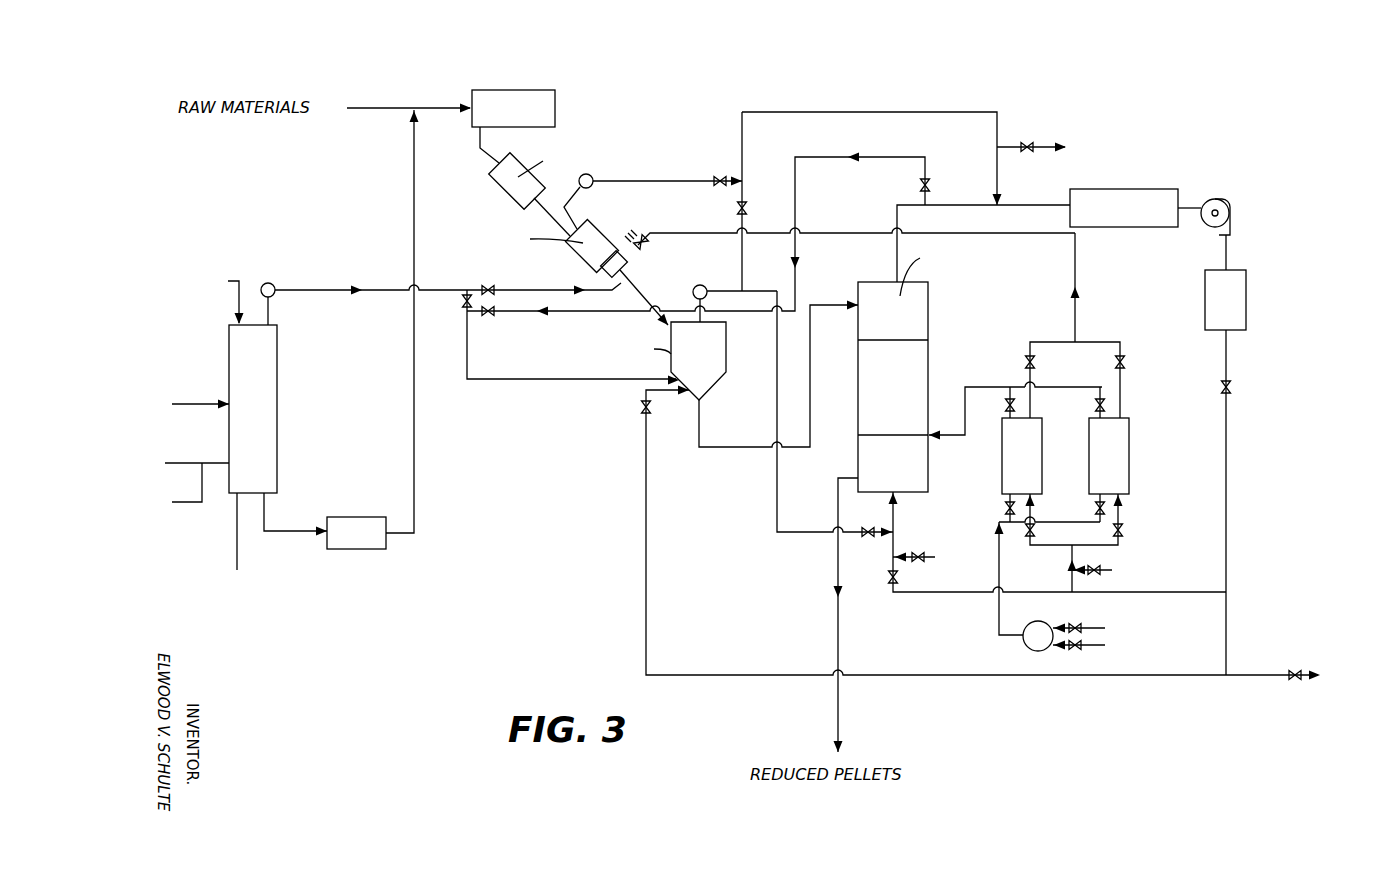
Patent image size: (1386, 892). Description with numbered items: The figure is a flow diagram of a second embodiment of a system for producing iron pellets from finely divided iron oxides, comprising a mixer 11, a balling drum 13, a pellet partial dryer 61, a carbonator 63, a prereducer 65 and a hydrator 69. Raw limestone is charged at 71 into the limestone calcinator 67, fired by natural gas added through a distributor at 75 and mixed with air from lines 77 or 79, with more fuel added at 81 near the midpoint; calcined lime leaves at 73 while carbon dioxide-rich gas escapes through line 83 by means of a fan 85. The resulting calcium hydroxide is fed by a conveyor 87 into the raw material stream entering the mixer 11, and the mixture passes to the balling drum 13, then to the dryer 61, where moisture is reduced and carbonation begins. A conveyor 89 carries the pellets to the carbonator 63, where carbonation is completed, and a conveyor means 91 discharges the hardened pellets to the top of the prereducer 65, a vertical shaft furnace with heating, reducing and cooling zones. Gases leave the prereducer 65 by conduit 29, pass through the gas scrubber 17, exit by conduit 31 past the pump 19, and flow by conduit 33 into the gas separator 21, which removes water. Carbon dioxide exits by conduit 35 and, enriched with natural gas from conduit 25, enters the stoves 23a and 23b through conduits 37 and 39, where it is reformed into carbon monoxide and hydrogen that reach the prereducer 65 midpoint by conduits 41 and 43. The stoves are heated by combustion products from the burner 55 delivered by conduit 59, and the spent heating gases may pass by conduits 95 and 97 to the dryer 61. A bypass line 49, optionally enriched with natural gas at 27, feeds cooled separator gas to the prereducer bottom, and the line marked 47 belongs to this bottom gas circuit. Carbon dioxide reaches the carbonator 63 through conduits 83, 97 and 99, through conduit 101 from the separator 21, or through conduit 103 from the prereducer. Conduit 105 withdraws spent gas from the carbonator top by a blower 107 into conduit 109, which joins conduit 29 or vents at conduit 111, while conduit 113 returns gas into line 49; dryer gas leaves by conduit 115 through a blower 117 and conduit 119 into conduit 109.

The mixer 11 is at (538, 90).
The balling drum 13 is at (487, 170).
The gas scrubber 17 is at (1135, 165).
The pump 19 is at (1230, 210).
The gas separator 21 is at (1205, 290).
The stove 23a is at (1002, 444).
The stove 23b is at (1130, 487).
The conduit 25 is at (1112, 575).
The natural gas enrichment point 27 is at (906, 557).
The conduit 29 is at (947, 205).
The conduit 31 is at (1193, 208).
The conduit 33 is at (1228, 250).
The conduit 35 is at (1203, 404).
The conduit 37 is at (1072, 580).
The conduit 39 is at (1040, 547).
The conduit 41 is at (1079, 387).
The conduit 43 is at (985, 387).
The conduit 47 is at (920, 597).
The line 49 is at (894, 512).
The burner 55 is at (1025, 645).
The conduit 59 is at (998, 555).
The pellet partial dryer 61 is at (595, 228).
The carbonator 63 is at (727, 348).
The prereducer 65 is at (928, 355).
The limestone calcinator 67 is at (278, 393).
The hydrator 69 is at (372, 517).
The limestone charging point 71 is at (242, 280).
The calcined lime outlet 73 is at (266, 513).
The fuel distributor 75 is at (212, 463).
The air line 77 is at (181, 505).
The air line 79 is at (238, 545).
The fuel addition point 81 is at (190, 404).
The line 83 is at (270, 312).
The fan 85 is at (274, 284).
The conveyor 87 is at (414, 412).
The conveyor 89 is at (634, 284).
The conveyor means 91 is at (733, 448).
The conduit 95 is at (1100, 342).
The conduit 97 is at (383, 290).
The conduit 99 is at (553, 380).
The conduit 101 is at (645, 515).
The conduit 103 is at (812, 157).
The conduit 105 is at (694, 293).
The blower 107 is at (704, 285).
The conduit 109 is at (898, 112).
The conduit 111 is at (1008, 146).
The conduit 113 is at (777, 496).
The conduit 115 is at (573, 200).
The blower 117 is at (593, 178).
The conduit 119 is at (697, 181).